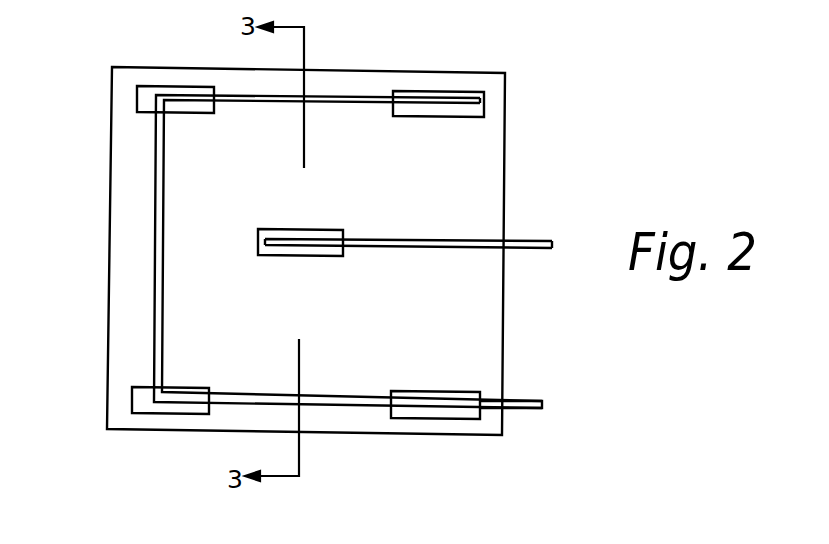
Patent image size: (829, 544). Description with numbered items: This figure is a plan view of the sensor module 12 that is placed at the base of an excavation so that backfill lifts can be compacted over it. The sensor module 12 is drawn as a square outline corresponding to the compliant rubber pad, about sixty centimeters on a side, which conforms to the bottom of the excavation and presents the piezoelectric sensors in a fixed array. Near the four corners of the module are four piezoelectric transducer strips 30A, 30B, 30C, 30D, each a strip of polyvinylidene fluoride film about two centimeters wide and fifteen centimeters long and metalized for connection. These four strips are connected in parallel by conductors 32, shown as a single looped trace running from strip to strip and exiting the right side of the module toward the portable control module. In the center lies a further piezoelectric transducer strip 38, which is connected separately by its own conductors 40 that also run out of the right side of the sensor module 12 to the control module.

The sensor module 12 is at (108, 235).
The piezoelectric transducer strip 30A is at (450, 418).
The piezoelectric transducer strip 30B is at (132, 398).
The piezoelectric transducer strip 30C is at (137, 100).
The piezoelectric transducer strip 30D is at (485, 100).
The conductors 32 is at (522, 402).
The piezoelectric transducer strip 38 is at (312, 229).
The conductors 40 is at (532, 241).